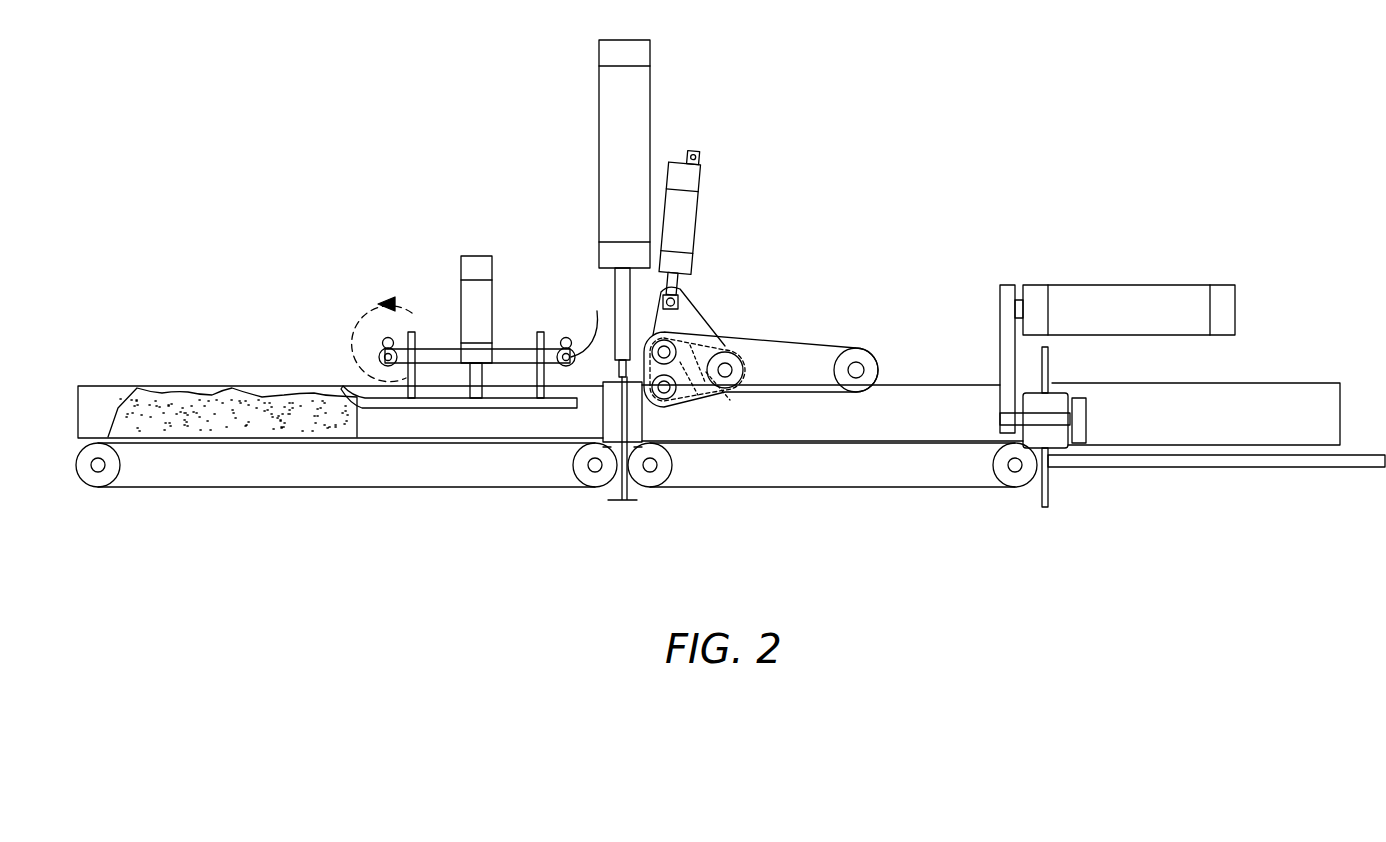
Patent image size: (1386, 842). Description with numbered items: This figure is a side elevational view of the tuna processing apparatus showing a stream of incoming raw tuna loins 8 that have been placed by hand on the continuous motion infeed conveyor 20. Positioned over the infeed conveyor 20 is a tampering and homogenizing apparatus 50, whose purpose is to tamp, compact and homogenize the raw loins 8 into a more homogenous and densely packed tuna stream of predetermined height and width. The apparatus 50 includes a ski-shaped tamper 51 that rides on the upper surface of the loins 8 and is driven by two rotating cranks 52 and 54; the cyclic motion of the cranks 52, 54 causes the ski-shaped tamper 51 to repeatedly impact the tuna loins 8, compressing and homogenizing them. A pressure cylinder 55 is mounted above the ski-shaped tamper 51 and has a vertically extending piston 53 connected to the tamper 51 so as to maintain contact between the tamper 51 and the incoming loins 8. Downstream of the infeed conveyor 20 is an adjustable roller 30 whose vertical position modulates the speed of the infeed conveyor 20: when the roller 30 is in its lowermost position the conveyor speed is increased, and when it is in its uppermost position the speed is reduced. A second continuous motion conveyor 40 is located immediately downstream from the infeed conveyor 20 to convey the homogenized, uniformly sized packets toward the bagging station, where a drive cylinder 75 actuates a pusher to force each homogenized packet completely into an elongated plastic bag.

The tuna loins 8 is at (152, 390).
The infeed conveyor 20 is at (380, 497).
The adjustable roller 30 is at (689, 331).
The second continuous motion conveyor 40 is at (829, 495).
The tampering and homogenizing apparatus 50 is at (453, 307).
The ski-shaped tamper 51 is at (463, 408).
The rotating crank 52 is at (378, 348).
The vertically extending piston 53 is at (487, 377).
The rotating crank 54 is at (577, 329).
The pressure cylinder 55 is at (483, 298).
The drive cylinder 75 is at (1165, 293).